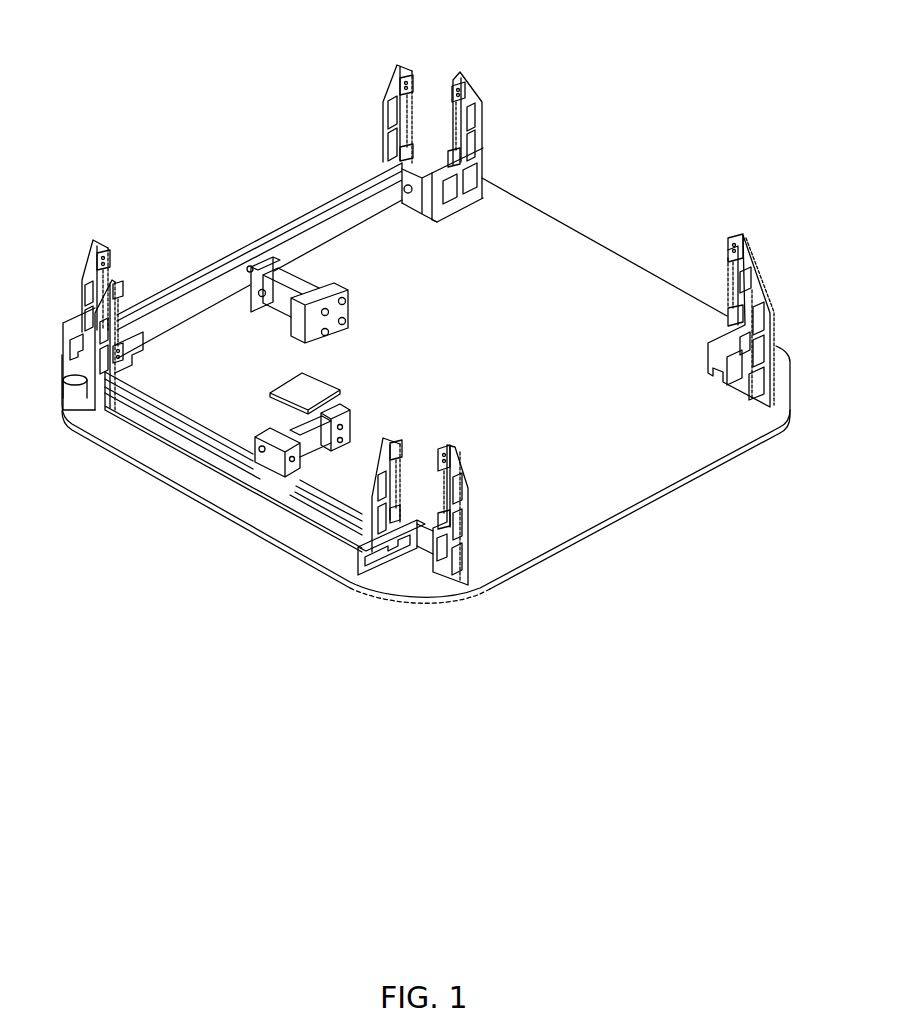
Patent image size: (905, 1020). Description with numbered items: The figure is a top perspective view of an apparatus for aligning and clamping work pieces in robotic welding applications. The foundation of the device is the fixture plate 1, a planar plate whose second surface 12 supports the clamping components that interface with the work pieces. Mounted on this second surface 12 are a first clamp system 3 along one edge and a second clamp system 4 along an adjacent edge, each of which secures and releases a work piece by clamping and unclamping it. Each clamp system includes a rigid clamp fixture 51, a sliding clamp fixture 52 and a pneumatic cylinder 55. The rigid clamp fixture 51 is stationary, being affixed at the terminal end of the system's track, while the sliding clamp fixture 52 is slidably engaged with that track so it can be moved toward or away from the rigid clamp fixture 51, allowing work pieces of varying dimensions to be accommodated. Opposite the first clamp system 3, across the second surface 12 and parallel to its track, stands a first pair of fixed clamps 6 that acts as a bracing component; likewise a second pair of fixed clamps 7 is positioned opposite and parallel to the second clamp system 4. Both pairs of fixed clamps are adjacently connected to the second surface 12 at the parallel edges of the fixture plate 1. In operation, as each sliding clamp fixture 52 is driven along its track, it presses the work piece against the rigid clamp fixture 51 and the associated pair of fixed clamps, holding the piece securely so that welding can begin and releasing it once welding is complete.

The fixture plate 1 is at (680, 514).
The first clamp system 3 is at (187, 511).
The second clamp system 4 is at (238, 217).
The first pair of fixed clamps 6 is at (470, 88).
The second pair of fixed clamps 7 is at (759, 294).
The second surface 12 is at (573, 244).
The rigid clamp fixture 51 is at (389, 91).
The sliding clamp fixture 52 is at (85, 272).
The pneumatic cylinder 55 is at (340, 291).